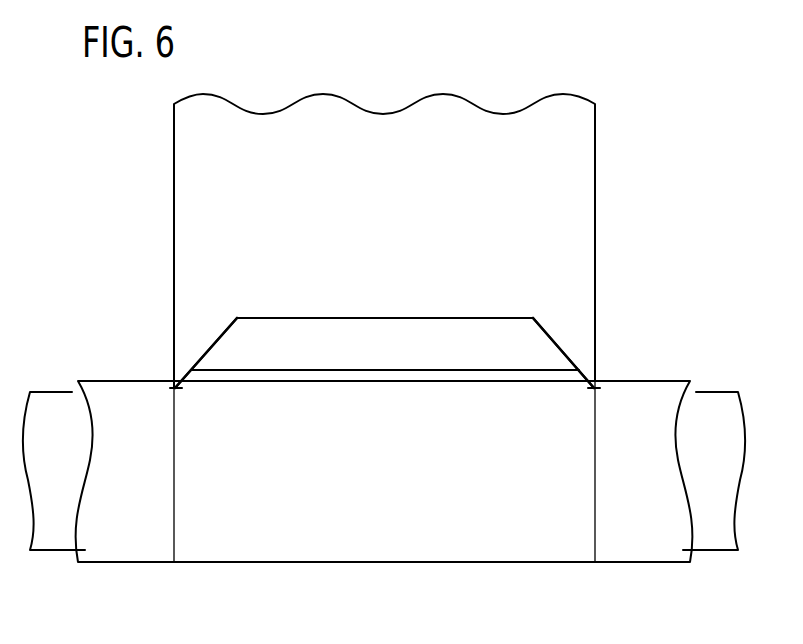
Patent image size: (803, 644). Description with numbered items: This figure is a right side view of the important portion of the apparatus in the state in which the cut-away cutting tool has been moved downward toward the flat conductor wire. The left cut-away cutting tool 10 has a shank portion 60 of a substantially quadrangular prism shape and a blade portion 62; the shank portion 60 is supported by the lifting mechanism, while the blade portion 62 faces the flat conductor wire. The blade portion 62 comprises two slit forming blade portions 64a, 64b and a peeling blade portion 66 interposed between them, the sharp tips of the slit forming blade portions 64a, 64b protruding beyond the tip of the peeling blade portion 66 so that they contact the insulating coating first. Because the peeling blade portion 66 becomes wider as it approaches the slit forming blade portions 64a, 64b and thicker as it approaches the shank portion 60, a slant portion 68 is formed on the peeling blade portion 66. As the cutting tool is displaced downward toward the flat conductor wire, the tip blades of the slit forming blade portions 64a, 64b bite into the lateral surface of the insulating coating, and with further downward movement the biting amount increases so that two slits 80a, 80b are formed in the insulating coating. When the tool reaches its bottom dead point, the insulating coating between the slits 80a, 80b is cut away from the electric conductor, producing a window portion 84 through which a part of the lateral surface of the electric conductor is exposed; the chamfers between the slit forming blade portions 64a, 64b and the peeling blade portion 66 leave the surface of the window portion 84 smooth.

The left cut-away cutting tool 10 is at (596, 131).
The shank portion 60 is at (198, 160).
The blade portion 62 is at (181, 340).
The slit forming blade portion 64a is at (172, 391).
The slit forming blade portion 64b is at (597, 391).
The peeling blade portion 66 is at (352, 372).
The slant portion 68 is at (391, 328).
The slit 80a is at (176, 386).
The slit 80b is at (593, 386).
The window portion 84 is at (414, 392).